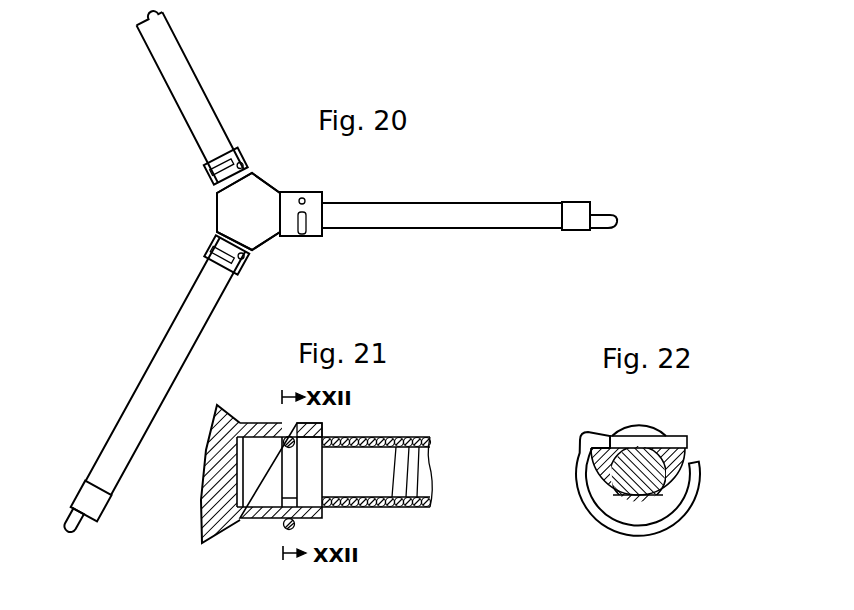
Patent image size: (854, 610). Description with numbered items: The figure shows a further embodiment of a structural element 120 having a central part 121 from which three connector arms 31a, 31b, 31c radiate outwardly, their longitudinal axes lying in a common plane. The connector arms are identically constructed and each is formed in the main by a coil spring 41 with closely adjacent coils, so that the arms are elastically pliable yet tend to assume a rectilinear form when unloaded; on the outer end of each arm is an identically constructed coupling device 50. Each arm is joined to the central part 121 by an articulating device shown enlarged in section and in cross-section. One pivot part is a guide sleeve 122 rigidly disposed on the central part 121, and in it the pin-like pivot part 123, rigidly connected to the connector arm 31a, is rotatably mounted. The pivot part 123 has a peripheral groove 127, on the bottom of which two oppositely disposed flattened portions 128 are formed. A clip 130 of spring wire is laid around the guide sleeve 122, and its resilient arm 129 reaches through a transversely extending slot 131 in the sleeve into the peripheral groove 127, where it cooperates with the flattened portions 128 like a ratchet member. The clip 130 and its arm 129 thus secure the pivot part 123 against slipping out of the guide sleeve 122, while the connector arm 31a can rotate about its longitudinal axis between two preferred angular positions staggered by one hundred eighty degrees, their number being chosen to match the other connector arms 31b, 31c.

In FIG. 20, the structural element 120 is at (186, 249).
In FIG. 20, the central part 121 is at (228, 212).
In FIG. 21, the central part 121 is at (212, 503).
In FIG. 20, the guide sleeve 122 is at (314, 203).
In FIG. 21, the guide sleeve 122 is at (262, 512).
In FIG. 21, the pivot part 123 is at (248, 475).
In FIG. 21, the peripheral groove 127 is at (290, 476).
In FIG. 22, the flattened portions 128 is at (638, 450).
In FIG. 21, the resilient arm 129 is at (277, 423).
In FIG. 22, the resilient arm 129 is at (677, 440).
In FIG. 21, the clip 130 is at (285, 533).
In FIG. 22, the clip 130 is at (598, 508).
In FIG. 21, the slot 131 is at (287, 430).
In FIG. 22, the slot 131 is at (627, 432).
In FIG. 20, the connector arm 31a is at (442, 212).
In FIG. 21, the connector arm 31a is at (395, 443).
In FIG. 20, the connector arm 31b is at (148, 387).
In FIG. 20, the connector arm 31c is at (160, 50).
In FIG. 21, the coil spring 41 is at (415, 508).
In FIG. 20, the coupling device 50 is at (585, 218).